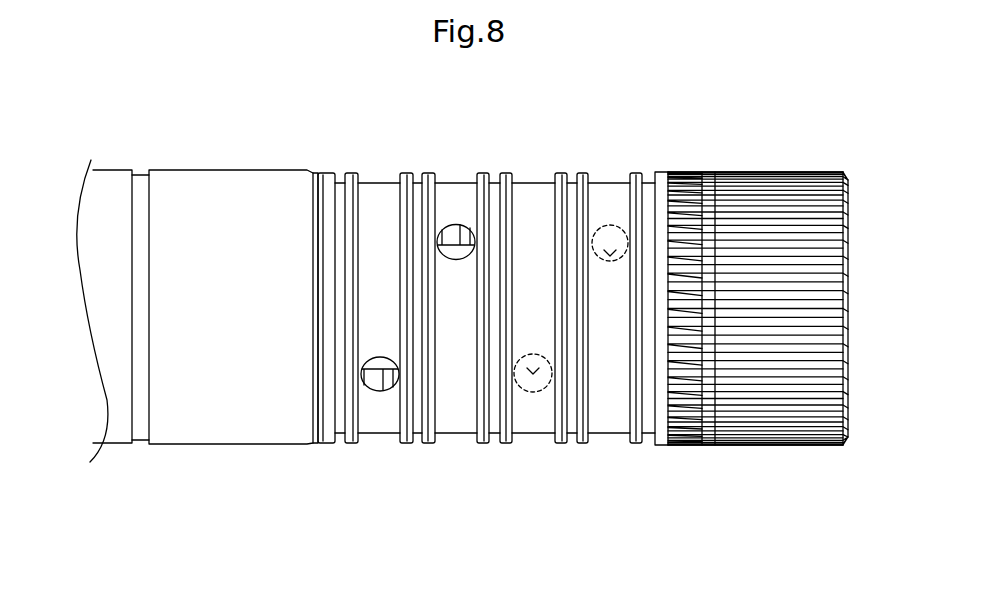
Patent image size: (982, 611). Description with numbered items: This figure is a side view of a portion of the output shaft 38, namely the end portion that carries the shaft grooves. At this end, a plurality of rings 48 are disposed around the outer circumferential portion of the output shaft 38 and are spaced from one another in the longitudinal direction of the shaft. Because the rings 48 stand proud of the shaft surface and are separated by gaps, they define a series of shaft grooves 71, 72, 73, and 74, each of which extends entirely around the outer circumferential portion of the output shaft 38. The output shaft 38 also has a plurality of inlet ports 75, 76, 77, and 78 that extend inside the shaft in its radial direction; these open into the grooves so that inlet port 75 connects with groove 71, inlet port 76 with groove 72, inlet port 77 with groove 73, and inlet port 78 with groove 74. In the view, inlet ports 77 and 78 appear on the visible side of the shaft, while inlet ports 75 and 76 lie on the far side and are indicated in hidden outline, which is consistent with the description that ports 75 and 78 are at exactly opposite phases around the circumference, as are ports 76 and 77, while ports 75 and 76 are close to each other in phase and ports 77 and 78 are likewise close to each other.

The output shaft 38 is at (200, 168).
The rings 48 is at (353, 445).
The shaft groove 71 is at (613, 176).
The shaft groove 72 is at (533, 176).
The shaft groove 73 is at (457, 176).
The shaft groove 74 is at (380, 176).
The inlet port 75 is at (610, 261).
The inlet port 76 is at (531, 355).
The inlet port 77 is at (456, 262).
The inlet port 78 is at (380, 358).